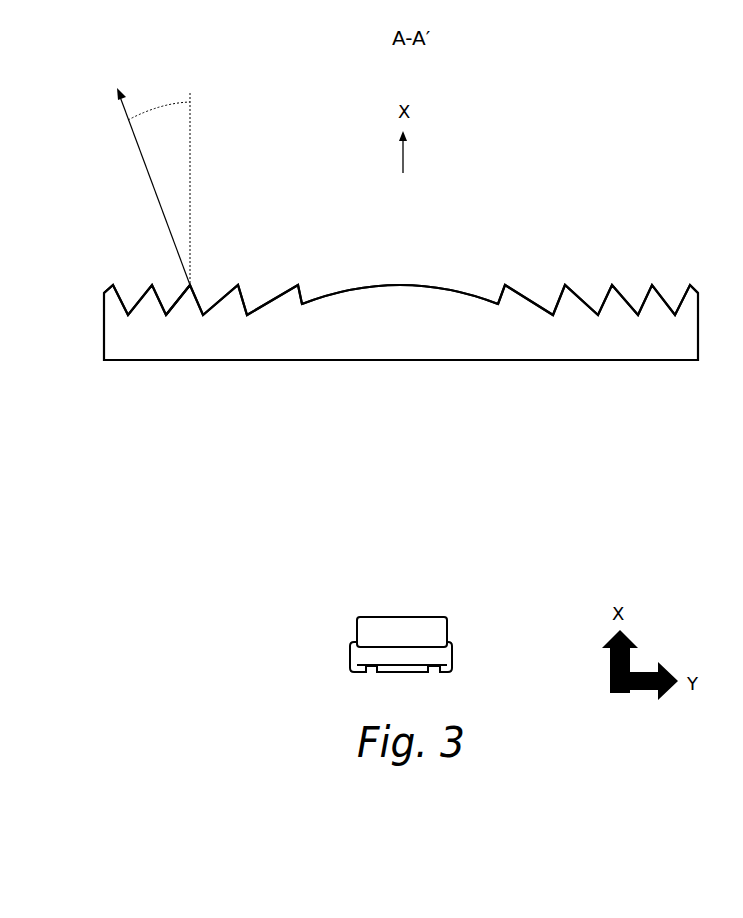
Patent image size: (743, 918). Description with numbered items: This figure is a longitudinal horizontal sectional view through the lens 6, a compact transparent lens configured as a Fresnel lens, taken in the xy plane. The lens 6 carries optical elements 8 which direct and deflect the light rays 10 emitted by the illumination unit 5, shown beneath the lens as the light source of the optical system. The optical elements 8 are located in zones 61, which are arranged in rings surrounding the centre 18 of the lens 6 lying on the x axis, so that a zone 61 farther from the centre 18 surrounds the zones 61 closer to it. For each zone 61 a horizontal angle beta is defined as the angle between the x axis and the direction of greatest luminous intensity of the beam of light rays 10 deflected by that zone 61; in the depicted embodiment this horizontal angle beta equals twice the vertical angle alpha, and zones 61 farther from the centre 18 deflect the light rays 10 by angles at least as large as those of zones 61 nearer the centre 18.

The illumination unit 5 is at (455, 643).
The lens 6 is at (586, 340).
The optical elements 8 is at (110, 302).
The light rays 10 is at (125, 102).
The centre of the lens 18 is at (403, 283).
The zones 61 is at (182, 298).